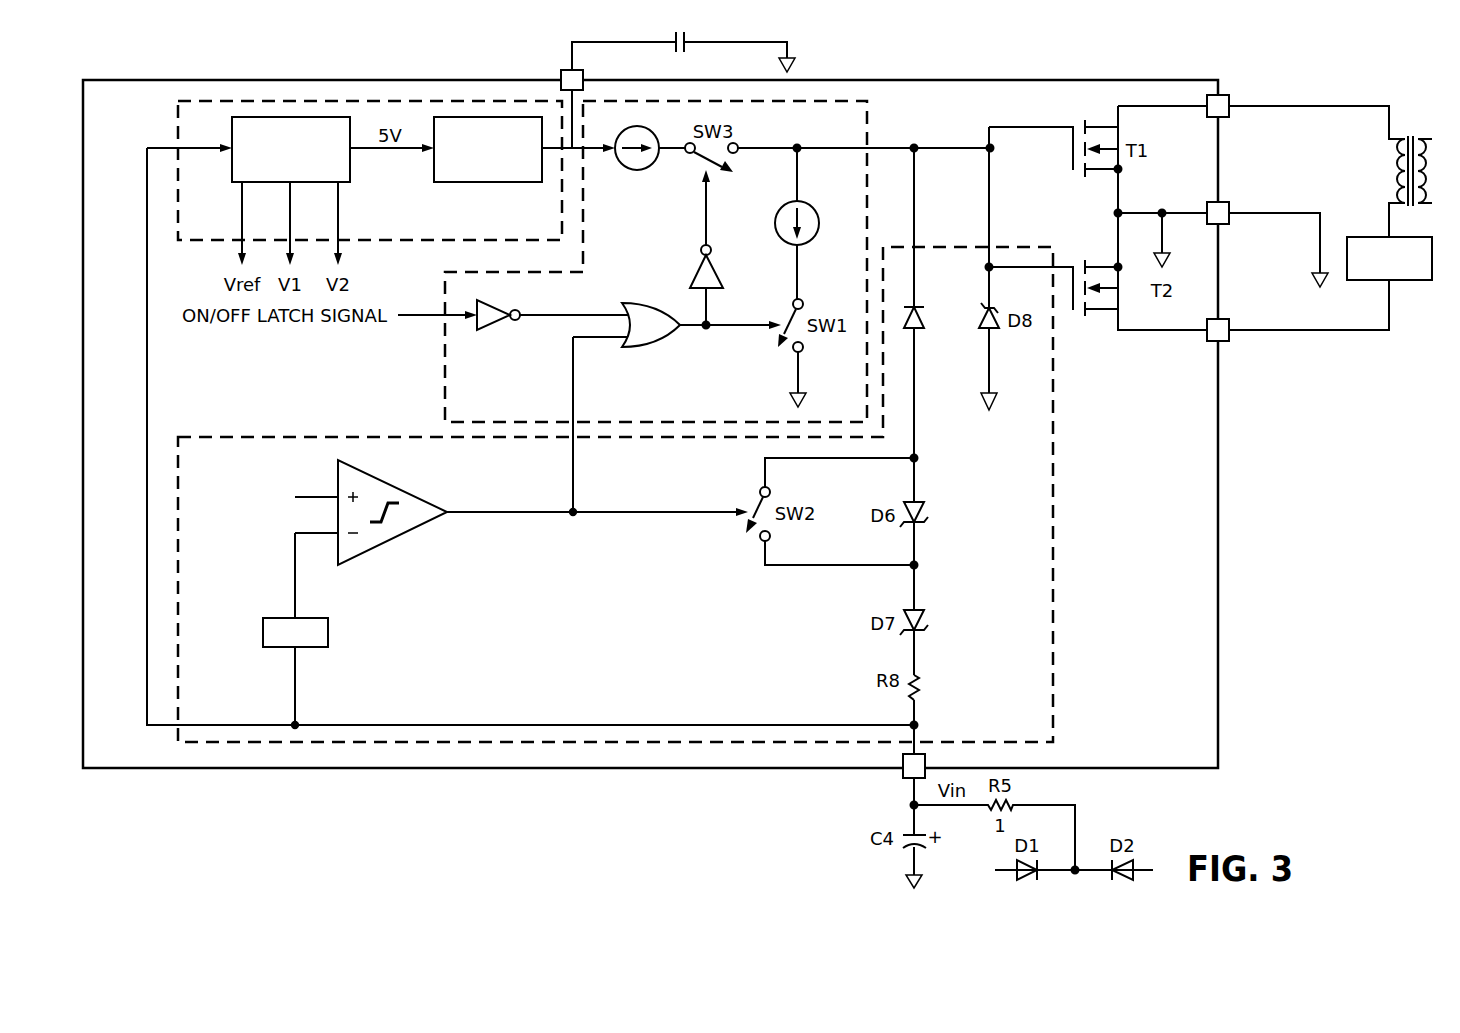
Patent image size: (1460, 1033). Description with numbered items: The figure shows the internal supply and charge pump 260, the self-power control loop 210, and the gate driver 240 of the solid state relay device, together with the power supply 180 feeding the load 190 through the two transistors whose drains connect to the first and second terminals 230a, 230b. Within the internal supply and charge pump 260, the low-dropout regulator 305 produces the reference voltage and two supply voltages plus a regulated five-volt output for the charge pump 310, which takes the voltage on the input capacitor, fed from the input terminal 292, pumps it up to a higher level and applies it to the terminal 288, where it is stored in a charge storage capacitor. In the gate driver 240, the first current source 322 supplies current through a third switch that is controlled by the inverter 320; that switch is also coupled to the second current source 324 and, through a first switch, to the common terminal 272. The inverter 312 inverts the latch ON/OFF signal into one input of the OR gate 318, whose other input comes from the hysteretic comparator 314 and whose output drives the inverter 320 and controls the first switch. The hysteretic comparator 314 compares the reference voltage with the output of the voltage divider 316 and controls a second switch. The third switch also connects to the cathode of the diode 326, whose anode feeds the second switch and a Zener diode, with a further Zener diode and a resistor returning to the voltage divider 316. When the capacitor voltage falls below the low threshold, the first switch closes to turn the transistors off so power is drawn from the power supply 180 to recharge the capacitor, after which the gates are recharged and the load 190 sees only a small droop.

The power supply 180 is at (1413, 107).
The load 190 is at (1412, 280).
The self-power control loop 210 is at (389, 433).
The terminal 230a is at (1240, 106).
The terminal 230b is at (1240, 330).
The gate driver 240 is at (874, 131).
The internal supply and charge pump 260 is at (172, 129).
The common terminal 272 is at (1232, 218).
The terminal 288 is at (562, 70).
The terminal 292 is at (903, 776).
The low-dropout regulator 305 is at (350, 165).
The charge pump 310 is at (490, 182).
The inverter 312 is at (513, 321).
The hysteretic comparator 314 is at (388, 540).
The voltage divider 316 is at (263, 632).
The OR gate 318 is at (640, 348).
The inverter 320 is at (718, 277).
The current source 322 is at (635, 170).
The current source 324 is at (812, 206).
The diode 326 is at (920, 326).